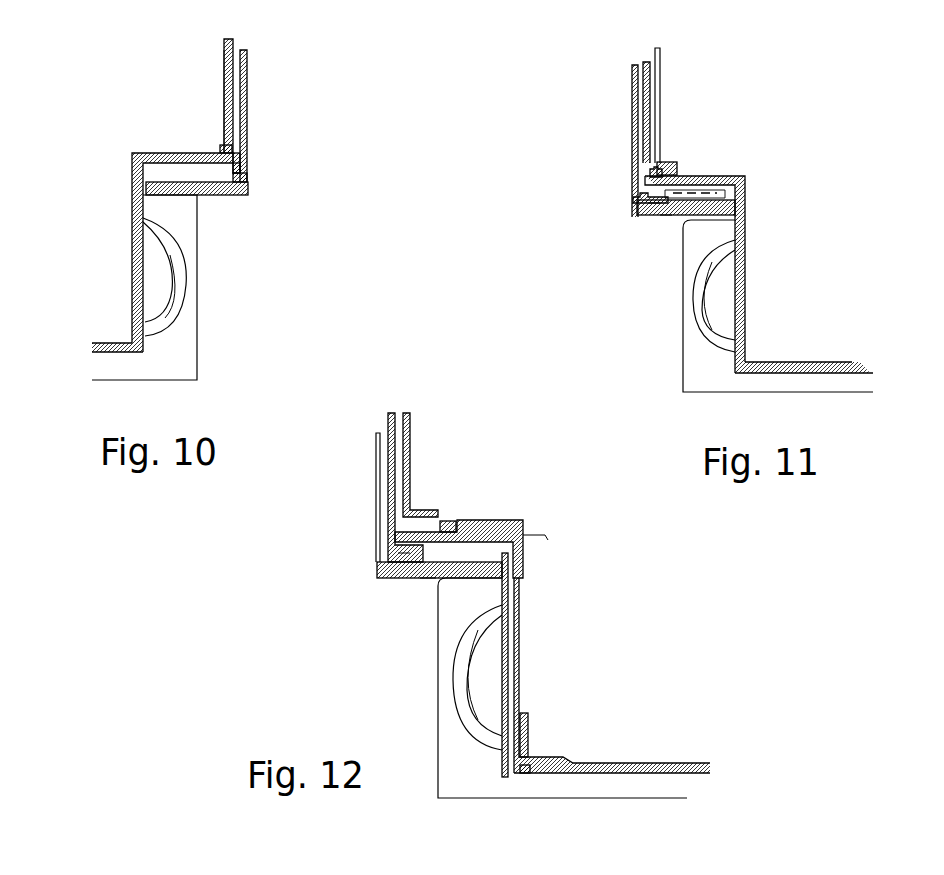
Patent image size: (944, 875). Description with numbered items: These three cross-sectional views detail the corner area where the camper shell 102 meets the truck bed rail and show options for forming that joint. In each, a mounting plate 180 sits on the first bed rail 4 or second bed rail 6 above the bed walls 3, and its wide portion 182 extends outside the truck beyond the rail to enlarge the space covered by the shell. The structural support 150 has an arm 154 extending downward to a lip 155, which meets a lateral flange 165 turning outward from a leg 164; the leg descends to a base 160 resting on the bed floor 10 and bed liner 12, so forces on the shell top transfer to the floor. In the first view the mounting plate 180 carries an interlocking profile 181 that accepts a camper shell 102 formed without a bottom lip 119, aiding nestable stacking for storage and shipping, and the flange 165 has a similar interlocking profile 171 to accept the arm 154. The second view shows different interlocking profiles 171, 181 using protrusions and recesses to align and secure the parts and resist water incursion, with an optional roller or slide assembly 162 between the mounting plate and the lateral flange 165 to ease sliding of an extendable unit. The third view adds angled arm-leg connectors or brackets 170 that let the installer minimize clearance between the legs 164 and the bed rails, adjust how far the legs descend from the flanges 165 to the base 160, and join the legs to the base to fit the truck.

In FIG. 10, the bed walls 3 is at (198, 352).
In FIG. 11, the bed walls 3 is at (683, 367).
In FIG. 12, the bed walls 3 is at (562, 688).
In FIG. 11, the first bed rail 4 is at (705, 233).
In FIG. 12, the first bed rail 4 is at (472, 590).
In FIG. 10, the second bed rail 6 is at (170, 207).
In FIG. 10, the bed floor 10 is at (100, 358).
In FIG. 11, the bed floor 10 is at (813, 372).
In FIG. 12, the bed floor 10 is at (668, 773).
In FIG. 10, the bed liner 12 is at (100, 358).
In FIG. 11, the bed liner 12 is at (813, 372).
In FIG. 12, the bed liner 12 is at (668, 773).
In FIG. 10, the camper shell 102 is at (245, 98).
In FIG. 11, the camper shell 102 is at (633, 132).
In FIG. 12, the camper shell 102 is at (377, 517).
In FIG. 11, the bottom lip 119 is at (658, 203).
In FIG. 12, the bottom lip 119 is at (405, 555).
In FIG. 10, the structural support 150 is at (223, 77).
In FIG. 11, the structural support 150 is at (658, 95).
In FIG. 12, the structural support 150 is at (517, 633).
In FIG. 10, the arm 154 is at (223, 103).
In FIG. 11, the arm 154 is at (657, 130).
In FIG. 12, the arm 154 is at (408, 458).
In FIG. 11, the lip 155 is at (667, 168).
In FIG. 12, the lip 155 is at (428, 512).
In FIG. 10, the base 160 is at (110, 343).
In FIG. 11, the base 160 is at (782, 360).
In FIG. 12, the base 160 is at (597, 762).
In FIG. 11, the roller or slide assembly 162 is at (718, 193).
In FIG. 10, the leg 164 is at (132, 263).
In FIG. 11, the leg 164 is at (748, 262).
In FIG. 12, the leg 164 is at (517, 670).
In FIG. 10, the lateral flange 165 is at (168, 152).
In FIG. 11, the lateral flange 165 is at (723, 175).
In FIG. 12, the lateral flange 165 is at (442, 528).
In FIG. 12, the arm-leg connector or bracket 170 is at (524, 540).
In FIG. 10, the interlocking profile 171 is at (225, 148).
In FIG. 11, the interlocking profile 171 is at (657, 170).
In FIG. 10, the mounting plate 180 is at (200, 190).
In FIG. 11, the mounting plate 180 is at (676, 219).
In FIG. 12, the mounting plate 180 is at (427, 573).
In FIG. 10, the interlocking profile 181 is at (245, 177).
In FIG. 11, the interlocking profile 181 is at (645, 203).
In FIG. 10, the wide portion 182 is at (246, 196).
In FIG. 11, the wide portion 182 is at (663, 217).
In FIG. 12, the wide portion 182 is at (380, 570).